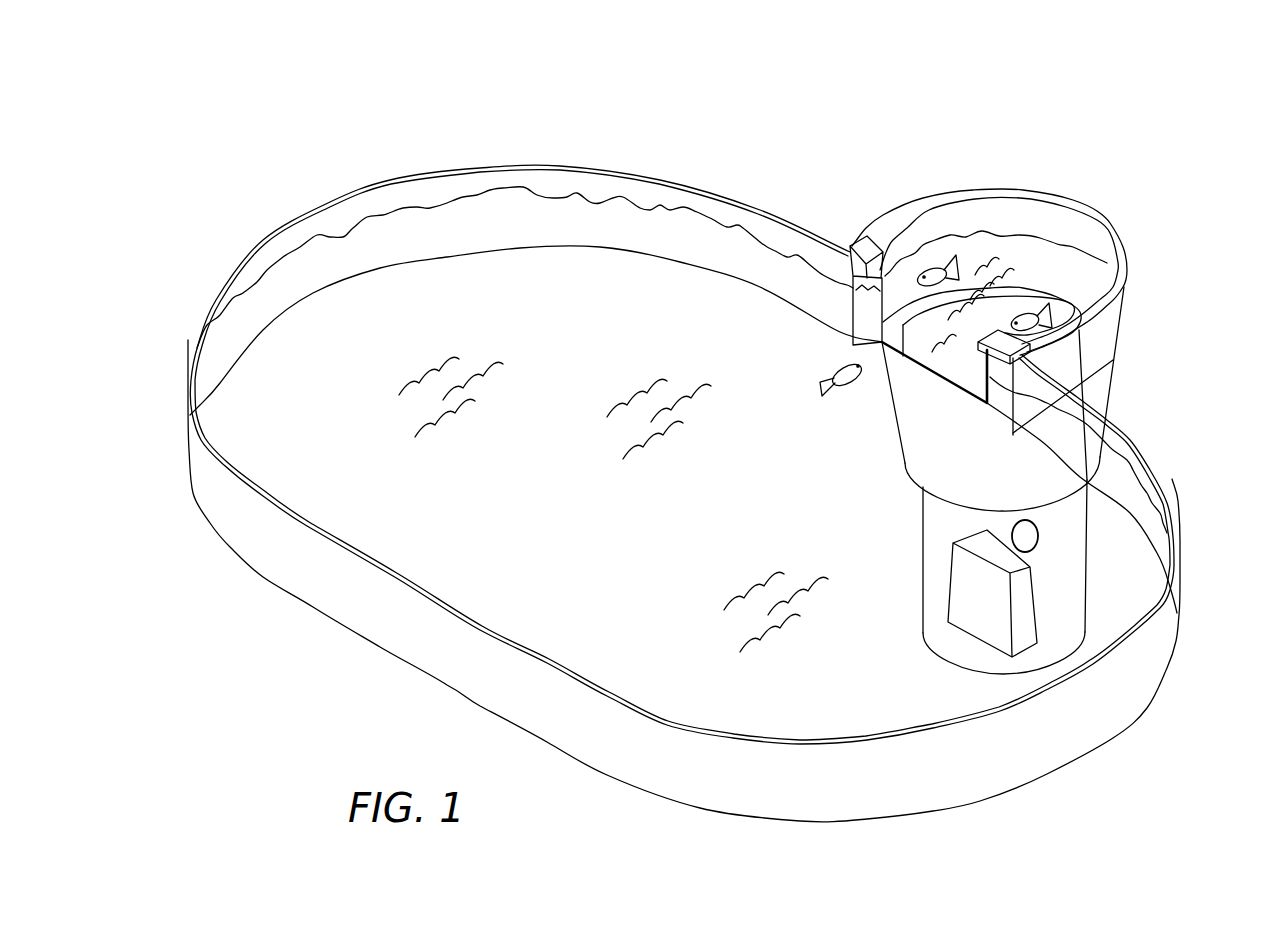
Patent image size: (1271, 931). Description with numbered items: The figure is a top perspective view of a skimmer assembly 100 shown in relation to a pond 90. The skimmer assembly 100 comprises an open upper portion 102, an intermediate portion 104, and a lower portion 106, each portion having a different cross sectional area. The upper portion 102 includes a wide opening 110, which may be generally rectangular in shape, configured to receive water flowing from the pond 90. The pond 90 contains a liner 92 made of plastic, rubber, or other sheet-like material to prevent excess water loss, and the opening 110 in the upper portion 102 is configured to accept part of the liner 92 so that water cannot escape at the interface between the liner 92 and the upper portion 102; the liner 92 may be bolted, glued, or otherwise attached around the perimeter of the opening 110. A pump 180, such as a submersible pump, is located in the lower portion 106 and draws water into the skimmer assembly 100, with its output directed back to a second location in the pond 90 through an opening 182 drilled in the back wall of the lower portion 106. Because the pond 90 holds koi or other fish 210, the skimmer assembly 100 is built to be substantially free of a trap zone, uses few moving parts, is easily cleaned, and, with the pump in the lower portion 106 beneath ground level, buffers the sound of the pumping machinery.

The skimmer assembly 100 is at (1143, 126).
The pond 90 is at (383, 305).
The liner 92 is at (572, 185).
The upper portion 102 is at (1108, 327).
The intermediate portion 104 is at (1078, 457).
The lower portion 106 is at (1084, 597).
The opening 110 is at (1074, 394).
The pump 180 is at (993, 630).
The opening 182 is at (1032, 533).
The fish 210 is at (934, 262).